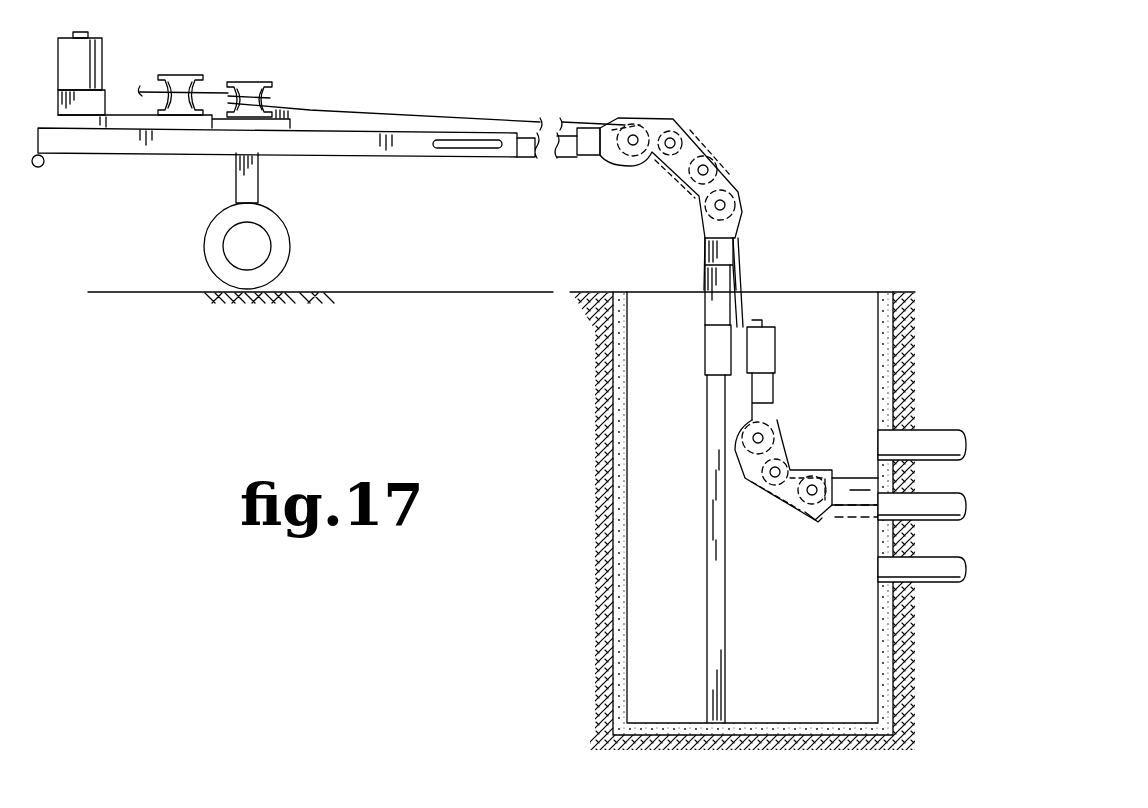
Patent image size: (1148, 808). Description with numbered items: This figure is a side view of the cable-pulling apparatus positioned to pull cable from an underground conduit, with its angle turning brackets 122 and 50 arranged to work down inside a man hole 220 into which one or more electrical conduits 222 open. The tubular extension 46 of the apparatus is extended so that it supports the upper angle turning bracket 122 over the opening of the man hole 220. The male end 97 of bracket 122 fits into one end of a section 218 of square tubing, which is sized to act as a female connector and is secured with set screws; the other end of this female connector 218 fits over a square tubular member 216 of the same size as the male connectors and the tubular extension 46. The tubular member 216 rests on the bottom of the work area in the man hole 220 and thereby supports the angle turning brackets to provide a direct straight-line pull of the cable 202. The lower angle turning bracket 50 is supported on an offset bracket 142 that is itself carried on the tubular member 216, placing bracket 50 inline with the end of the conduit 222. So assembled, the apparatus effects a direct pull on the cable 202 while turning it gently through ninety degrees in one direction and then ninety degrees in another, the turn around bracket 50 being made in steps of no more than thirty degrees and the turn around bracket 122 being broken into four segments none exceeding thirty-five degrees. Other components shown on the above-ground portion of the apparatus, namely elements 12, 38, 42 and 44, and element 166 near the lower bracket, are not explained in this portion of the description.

The trailer 12 is at (316, 148).
The power unit 38 is at (96, 46).
The winch 42 is at (181, 75).
The winch 44 is at (263, 82).
The tubular extension 46 is at (526, 148).
The angle turning bracket 122 is at (732, 148).
The male end 97 is at (738, 256).
The section of square tubing 218 is at (712, 316).
The offset bracket 142 is at (698, 366).
The square tubular member 216 is at (713, 606).
The cable 202 is at (762, 332).
The angle turning bracket 50 is at (814, 458).
The nozzle tip 166 is at (818, 522).
The man hole 220 is at (634, 318).
The electrical conduits 222 is at (890, 440).